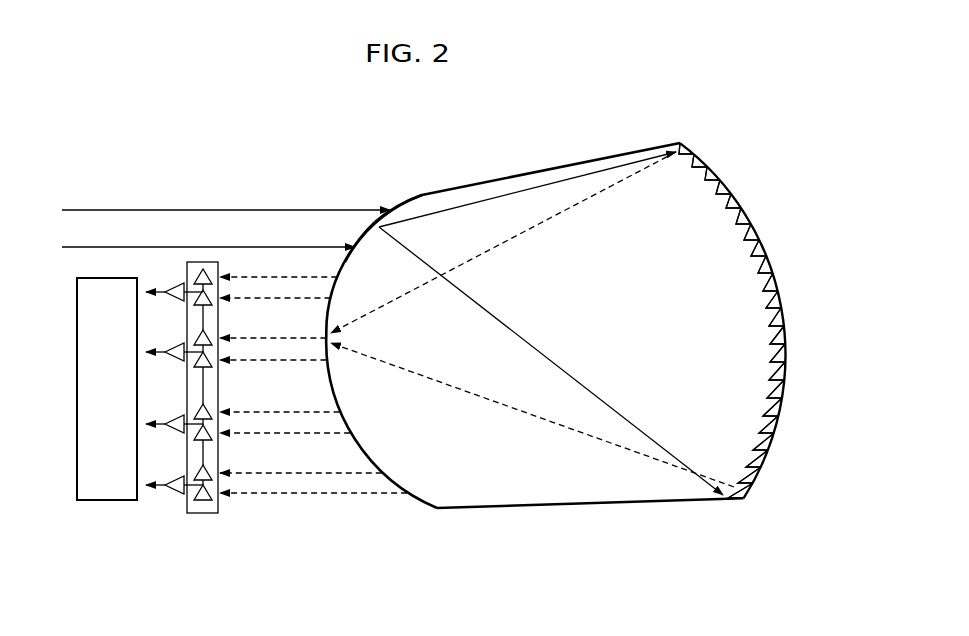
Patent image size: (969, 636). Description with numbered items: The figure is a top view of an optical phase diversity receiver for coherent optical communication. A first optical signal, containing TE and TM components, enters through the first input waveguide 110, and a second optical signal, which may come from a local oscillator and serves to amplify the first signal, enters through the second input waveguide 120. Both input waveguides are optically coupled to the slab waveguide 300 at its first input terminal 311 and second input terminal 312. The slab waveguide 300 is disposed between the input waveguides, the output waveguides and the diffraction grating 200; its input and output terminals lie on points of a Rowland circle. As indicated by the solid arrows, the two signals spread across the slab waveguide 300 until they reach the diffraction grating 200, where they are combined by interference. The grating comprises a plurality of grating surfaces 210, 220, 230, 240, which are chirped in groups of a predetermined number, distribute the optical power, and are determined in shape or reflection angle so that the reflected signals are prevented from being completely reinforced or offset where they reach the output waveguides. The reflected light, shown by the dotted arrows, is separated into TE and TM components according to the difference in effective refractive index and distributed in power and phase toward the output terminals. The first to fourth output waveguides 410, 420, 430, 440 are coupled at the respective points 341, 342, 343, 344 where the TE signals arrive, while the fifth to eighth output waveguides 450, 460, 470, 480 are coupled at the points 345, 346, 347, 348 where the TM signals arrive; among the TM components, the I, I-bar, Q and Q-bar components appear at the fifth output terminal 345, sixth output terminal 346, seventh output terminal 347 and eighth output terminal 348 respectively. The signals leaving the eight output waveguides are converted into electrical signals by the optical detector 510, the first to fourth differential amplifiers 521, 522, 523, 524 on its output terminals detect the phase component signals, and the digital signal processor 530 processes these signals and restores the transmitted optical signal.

The first input waveguide 110 is at (84, 209).
The second input waveguide 120 is at (124, 246).
The diffraction grating 200 is at (757, 497).
The grating surface 210 is at (683, 153).
The grating surface 220 is at (698, 166).
The grating surface 230 is at (712, 180).
The grating surface 240 is at (724, 195).
The slab waveguide 300 is at (673, 506).
The first input terminal 311 is at (391, 209).
The second input terminal 312 is at (352, 245).
The first output terminal 341 is at (338, 278).
The second output terminal 342 is at (331, 300).
The third output terminal 343 is at (300, 350).
The fourth output terminal 344 is at (327, 362).
The fifth output terminal 345 is at (340, 468).
The sixth output terminal 346 is at (352, 433).
The seventh output terminal 347 is at (382, 495).
The eighth output terminal 348 is at (407, 498).
The first output waveguide 410 is at (247, 277).
The second output waveguide 420 is at (275, 298).
The third output waveguide 430 is at (311, 338).
The fourth output waveguide 440 is at (326, 340).
The fifth output waveguide 450 is at (247, 413).
The sixth output waveguide 460 is at (277, 434).
The seventh output waveguide 470 is at (300, 474).
The eighth output waveguide 480 is at (367, 496).
The optical detector 510 is at (213, 513).
The first differential amplifier 521 is at (176, 283).
The second differential amplifier 522 is at (180, 358).
The third differential amplifier 523 is at (180, 430).
The fourth differential amplifier 524 is at (170, 492).
The digital signal processor 530 is at (107, 501).